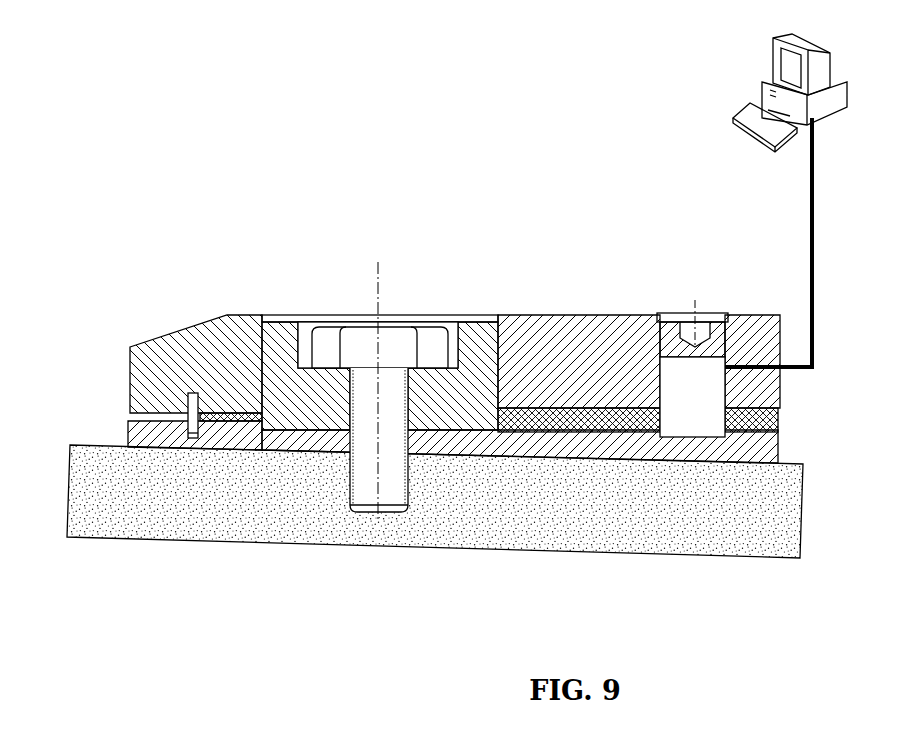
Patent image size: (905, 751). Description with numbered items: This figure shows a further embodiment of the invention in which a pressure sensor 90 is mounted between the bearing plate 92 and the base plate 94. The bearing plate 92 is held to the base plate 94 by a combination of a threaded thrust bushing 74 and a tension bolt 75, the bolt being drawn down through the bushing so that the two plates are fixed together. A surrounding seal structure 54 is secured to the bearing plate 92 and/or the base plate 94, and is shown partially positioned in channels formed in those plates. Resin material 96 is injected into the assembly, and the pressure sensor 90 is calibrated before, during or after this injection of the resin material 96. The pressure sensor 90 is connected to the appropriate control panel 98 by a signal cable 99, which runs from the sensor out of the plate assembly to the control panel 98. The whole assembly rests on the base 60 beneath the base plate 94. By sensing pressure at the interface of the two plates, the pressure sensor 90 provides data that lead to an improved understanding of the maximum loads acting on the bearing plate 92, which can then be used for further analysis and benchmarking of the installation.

The surrounding seal structure 54 is at (188, 396).
The base 60 is at (795, 560).
The threaded thrust bushing 74 is at (278, 322).
The tension bolt 75 is at (397, 332).
The pressure sensor 90 is at (715, 438).
The bearing plate 92 is at (518, 313).
The base plate 94 is at (493, 445).
The resin material 96 is at (775, 422).
The control panel 98 is at (760, 93).
The signal cable 99 is at (807, 293).